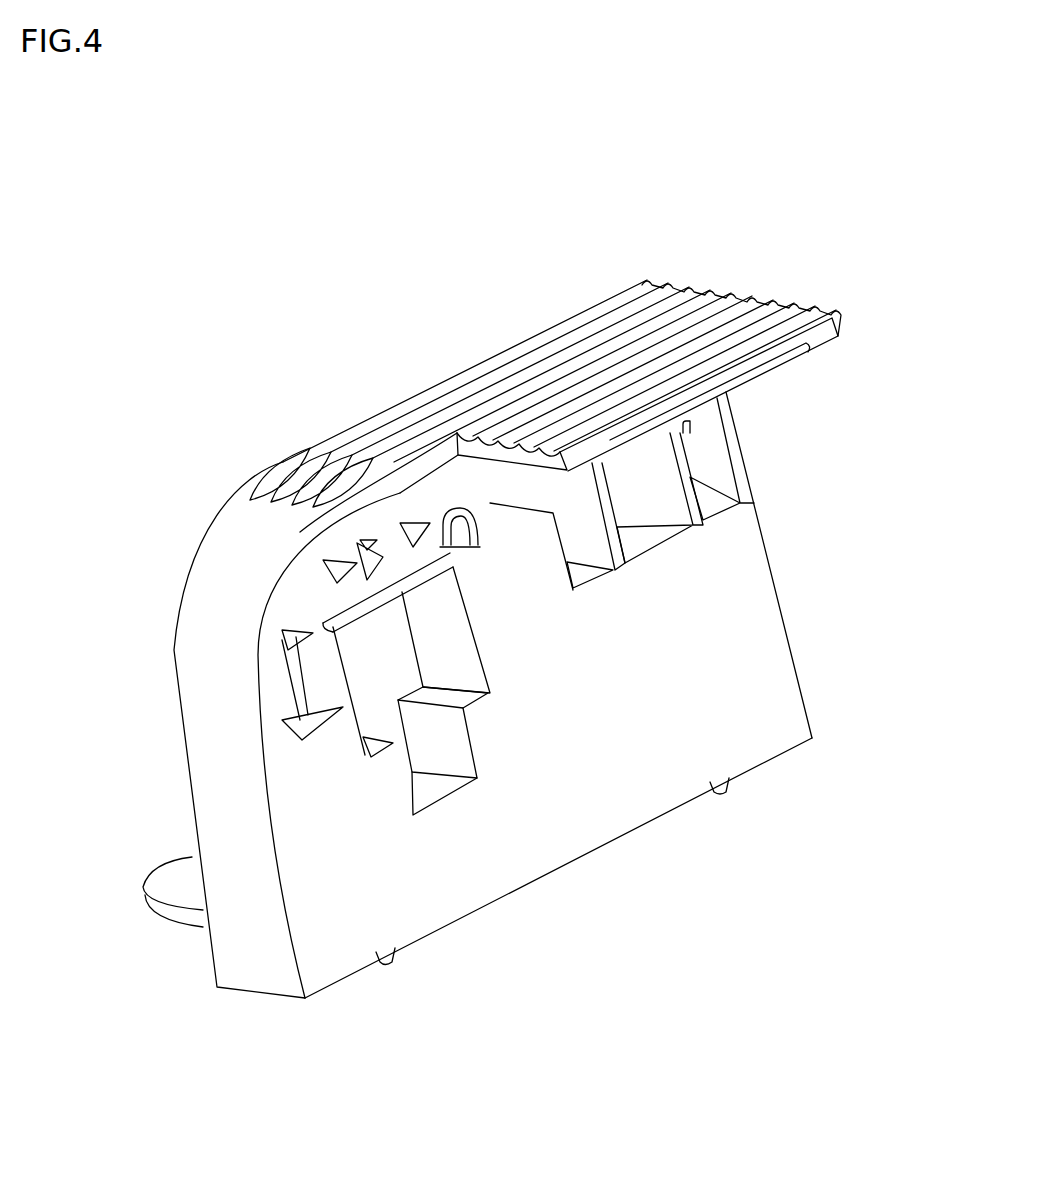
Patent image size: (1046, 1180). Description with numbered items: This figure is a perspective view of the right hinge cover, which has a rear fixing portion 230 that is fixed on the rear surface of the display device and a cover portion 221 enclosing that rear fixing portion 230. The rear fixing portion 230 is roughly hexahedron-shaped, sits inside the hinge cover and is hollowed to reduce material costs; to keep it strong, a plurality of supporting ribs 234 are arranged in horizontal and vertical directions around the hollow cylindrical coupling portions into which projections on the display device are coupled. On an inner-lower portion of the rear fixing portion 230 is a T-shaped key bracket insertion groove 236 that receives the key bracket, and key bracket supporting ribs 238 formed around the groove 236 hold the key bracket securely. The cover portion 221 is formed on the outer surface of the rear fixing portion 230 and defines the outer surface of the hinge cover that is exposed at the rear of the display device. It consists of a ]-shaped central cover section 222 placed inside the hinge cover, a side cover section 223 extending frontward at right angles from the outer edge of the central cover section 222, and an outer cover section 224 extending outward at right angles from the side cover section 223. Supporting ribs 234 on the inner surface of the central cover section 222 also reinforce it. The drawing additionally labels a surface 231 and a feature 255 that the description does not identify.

The cover portion 221 is at (283, 463).
The central cover section 222 is at (565, 345).
The side cover section 223 is at (175, 625).
The outer cover section 224 is at (176, 880).
The rear fixing portion 230 is at (763, 768).
The front plate surface 231 is at (747, 620).
The supporting ribs 234 is at (717, 477).
The key bracket insertion groove 236 is at (430, 748).
The key bracket supporting ribs 238 is at (378, 556).
The fin end portions 255 is at (703, 300).